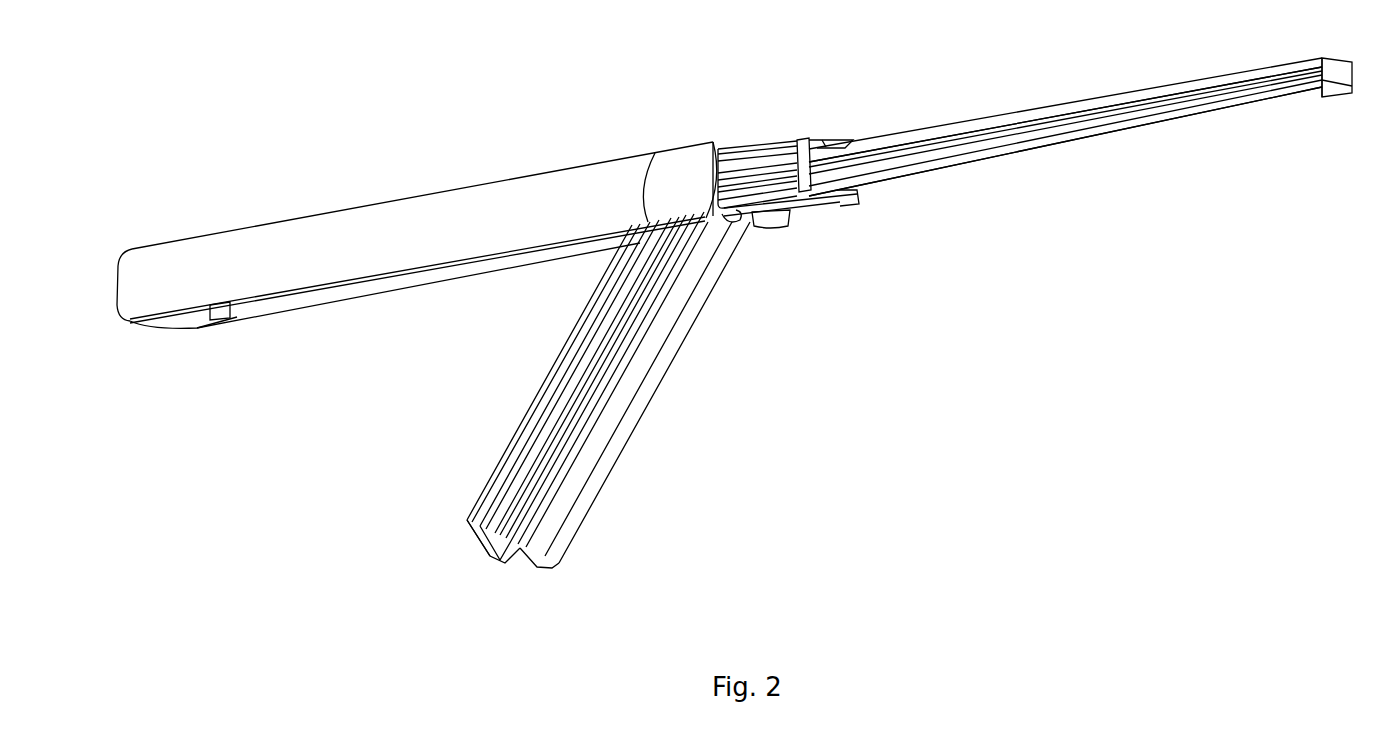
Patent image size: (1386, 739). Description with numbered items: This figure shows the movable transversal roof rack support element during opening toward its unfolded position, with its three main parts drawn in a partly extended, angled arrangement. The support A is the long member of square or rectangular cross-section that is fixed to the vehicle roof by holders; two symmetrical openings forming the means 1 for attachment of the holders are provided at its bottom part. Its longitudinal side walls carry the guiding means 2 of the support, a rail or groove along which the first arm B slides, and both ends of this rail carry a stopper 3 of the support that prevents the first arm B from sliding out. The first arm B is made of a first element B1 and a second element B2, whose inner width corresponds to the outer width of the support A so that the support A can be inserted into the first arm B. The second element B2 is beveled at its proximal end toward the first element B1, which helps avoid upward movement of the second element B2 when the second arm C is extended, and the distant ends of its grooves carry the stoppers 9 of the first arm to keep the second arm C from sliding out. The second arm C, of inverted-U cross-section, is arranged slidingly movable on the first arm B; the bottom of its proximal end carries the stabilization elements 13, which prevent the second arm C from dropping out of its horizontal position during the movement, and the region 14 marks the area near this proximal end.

The means for attachment of holders 1 is at (1273, 103).
The guiding means of the support 2 is at (1139, 110).
The stopper of the support 3 is at (1321, 82).
The stopper of the first arm 9 is at (473, 535).
The stabilization element 13 is at (790, 227).
The region R 14 is at (733, 218).
The support A is at (1045, 168).
The first arm B is at (580, 314).
The second arm C is at (396, 170).
The first element of the first arm B1 is at (800, 138).
The second element of the first arm B2 is at (587, 500).